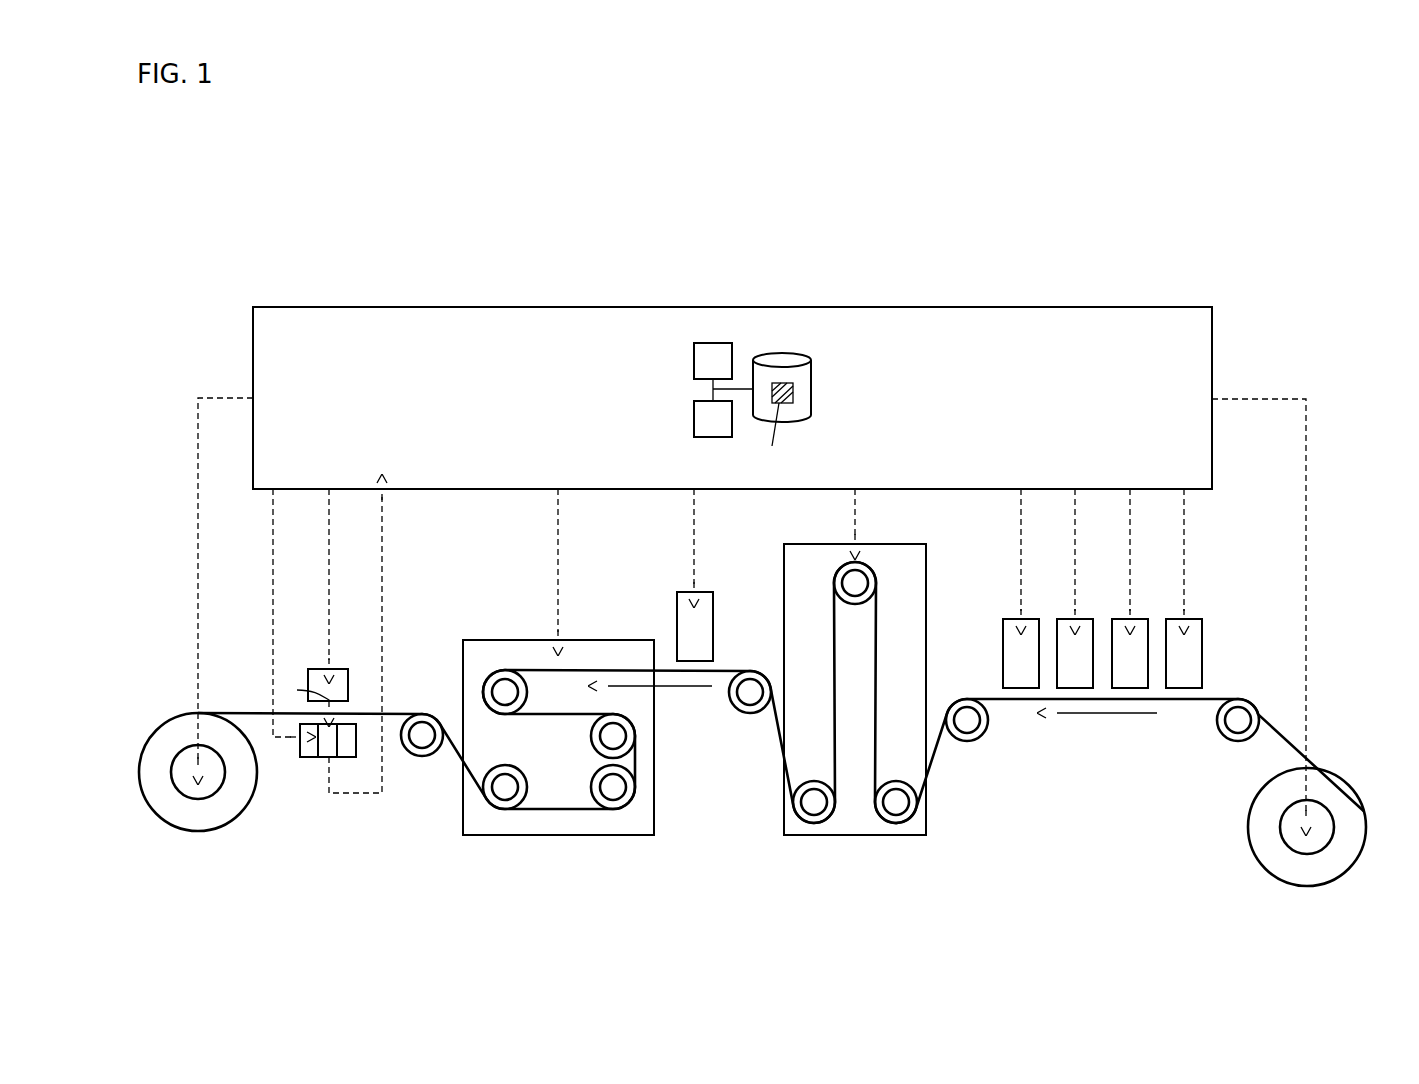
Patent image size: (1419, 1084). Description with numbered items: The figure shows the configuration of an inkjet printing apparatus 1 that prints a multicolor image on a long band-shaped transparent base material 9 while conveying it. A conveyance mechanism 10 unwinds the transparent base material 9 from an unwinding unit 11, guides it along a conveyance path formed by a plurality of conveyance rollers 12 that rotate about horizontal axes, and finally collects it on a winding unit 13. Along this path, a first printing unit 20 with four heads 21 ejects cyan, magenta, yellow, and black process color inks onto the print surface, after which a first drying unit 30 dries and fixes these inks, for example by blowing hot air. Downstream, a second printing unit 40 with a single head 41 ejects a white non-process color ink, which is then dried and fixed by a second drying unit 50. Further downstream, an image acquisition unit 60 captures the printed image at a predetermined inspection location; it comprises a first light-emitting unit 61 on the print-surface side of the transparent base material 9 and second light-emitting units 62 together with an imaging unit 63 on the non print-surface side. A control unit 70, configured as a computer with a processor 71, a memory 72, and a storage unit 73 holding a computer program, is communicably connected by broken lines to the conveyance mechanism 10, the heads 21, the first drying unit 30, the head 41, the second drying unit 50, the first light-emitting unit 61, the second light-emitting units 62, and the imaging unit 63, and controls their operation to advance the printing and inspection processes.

The inkjet printing apparatus 1 is at (483, 238).
The transparent base material 9 is at (1292, 733).
The conveyance mechanism 10 is at (1279, 855).
The unwinding unit 11 is at (1305, 852).
The conveyance rollers 12 is at (422, 745).
The winding unit 13 is at (200, 782).
The first printing unit 20 is at (1130, 628).
The heads 21 is at (1013, 638).
The first drying unit 30 is at (782, 808).
The second printing unit 40 is at (655, 604).
The head 41 is at (703, 615).
The second drying unit 50 is at (503, 640).
The image acquisition unit 60 is at (322, 764).
The first light-emitting unit 61 is at (330, 683).
The second light-emitting units 62 is at (306, 745).
The imaging unit 63 is at (316, 770).
The control unit 70 is at (1033, 307).
The processor 71 is at (693, 362).
The memory 72 is at (693, 418).
The storage unit 73 is at (812, 390).